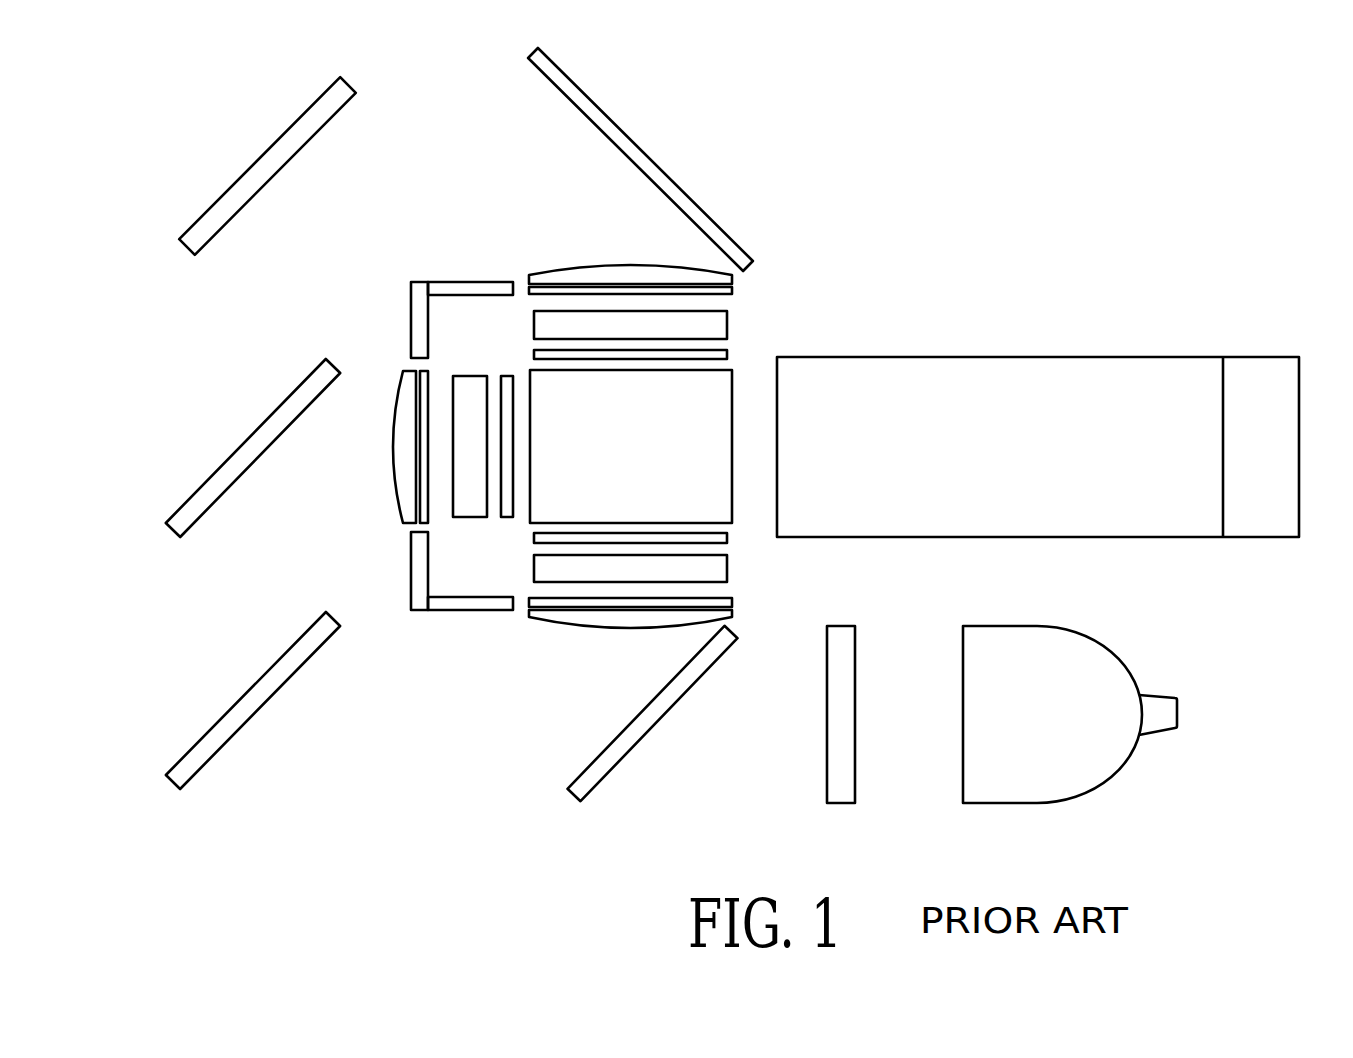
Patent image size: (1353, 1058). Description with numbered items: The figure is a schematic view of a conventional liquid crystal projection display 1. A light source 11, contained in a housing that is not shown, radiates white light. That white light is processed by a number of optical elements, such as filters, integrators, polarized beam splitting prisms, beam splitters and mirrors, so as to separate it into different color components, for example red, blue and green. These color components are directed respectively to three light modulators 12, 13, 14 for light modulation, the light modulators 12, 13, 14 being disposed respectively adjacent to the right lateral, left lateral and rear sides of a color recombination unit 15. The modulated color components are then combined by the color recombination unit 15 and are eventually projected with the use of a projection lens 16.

The liquid crystal projection display 1 is at (832, 204).
The light source 11 is at (1120, 668).
The light modulator 12 is at (738, 322).
The light modulator 13 is at (740, 570).
The light modulator 14 is at (440, 461).
The color recombination unit 15 is at (695, 445).
The projection lens 16 is at (1000, 412).